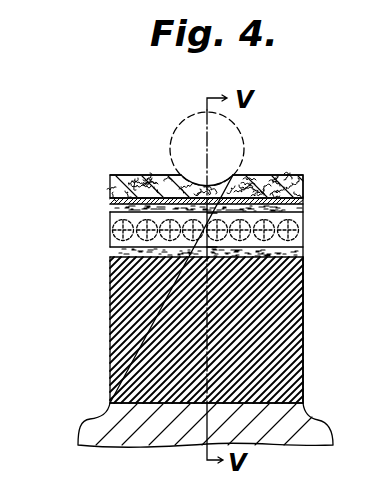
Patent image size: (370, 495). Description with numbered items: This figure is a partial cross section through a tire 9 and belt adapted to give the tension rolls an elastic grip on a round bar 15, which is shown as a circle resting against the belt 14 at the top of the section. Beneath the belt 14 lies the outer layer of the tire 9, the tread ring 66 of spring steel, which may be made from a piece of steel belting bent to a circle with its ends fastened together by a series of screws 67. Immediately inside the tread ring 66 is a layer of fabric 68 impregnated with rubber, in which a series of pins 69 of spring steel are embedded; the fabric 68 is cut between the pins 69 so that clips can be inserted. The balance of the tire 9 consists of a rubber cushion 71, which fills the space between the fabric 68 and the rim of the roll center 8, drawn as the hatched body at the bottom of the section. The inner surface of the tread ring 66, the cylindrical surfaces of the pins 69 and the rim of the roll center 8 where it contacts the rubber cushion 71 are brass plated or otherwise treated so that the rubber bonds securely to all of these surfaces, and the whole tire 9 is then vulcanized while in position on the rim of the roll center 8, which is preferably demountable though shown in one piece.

The ball / indenting element 15 is at (193, 182).
The top fibrous layer 14 is at (152, 182).
The tread ring 66 is at (303, 200).
The screws 67 is at (285, 239).
The layer of fabric 68 is at (303, 251).
The pins 69 is at (110, 231).
The tire 9 is at (110, 316).
The rubber cushion 71 is at (303, 340).
The roll center 8 is at (90, 431).